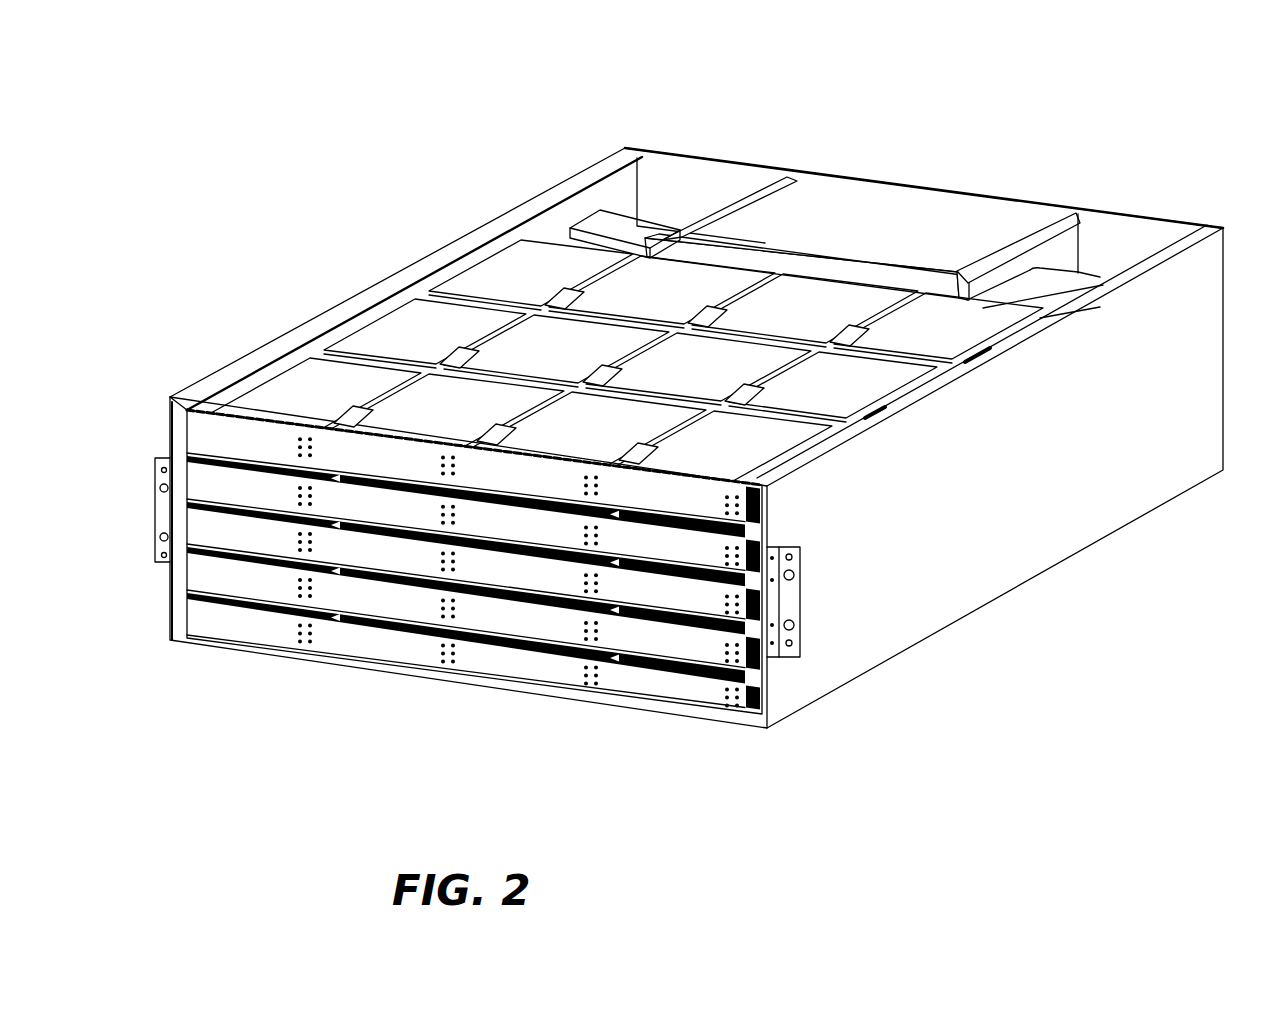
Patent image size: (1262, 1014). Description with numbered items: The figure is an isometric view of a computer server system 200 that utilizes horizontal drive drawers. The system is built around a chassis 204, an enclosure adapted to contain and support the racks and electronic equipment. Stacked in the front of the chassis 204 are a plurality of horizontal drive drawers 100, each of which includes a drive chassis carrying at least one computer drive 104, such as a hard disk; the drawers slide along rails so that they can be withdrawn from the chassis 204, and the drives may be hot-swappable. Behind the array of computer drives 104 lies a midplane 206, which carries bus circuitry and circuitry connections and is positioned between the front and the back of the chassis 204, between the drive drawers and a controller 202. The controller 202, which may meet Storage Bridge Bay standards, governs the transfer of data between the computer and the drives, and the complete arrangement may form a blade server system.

The horizontal drive drawer 100 is at (527, 477).
The computer drive 104 is at (363, 340).
The computer server system 200 is at (281, 693).
The controller 202 is at (870, 207).
The chassis 204 is at (843, 655).
The midplane 206 is at (799, 262).